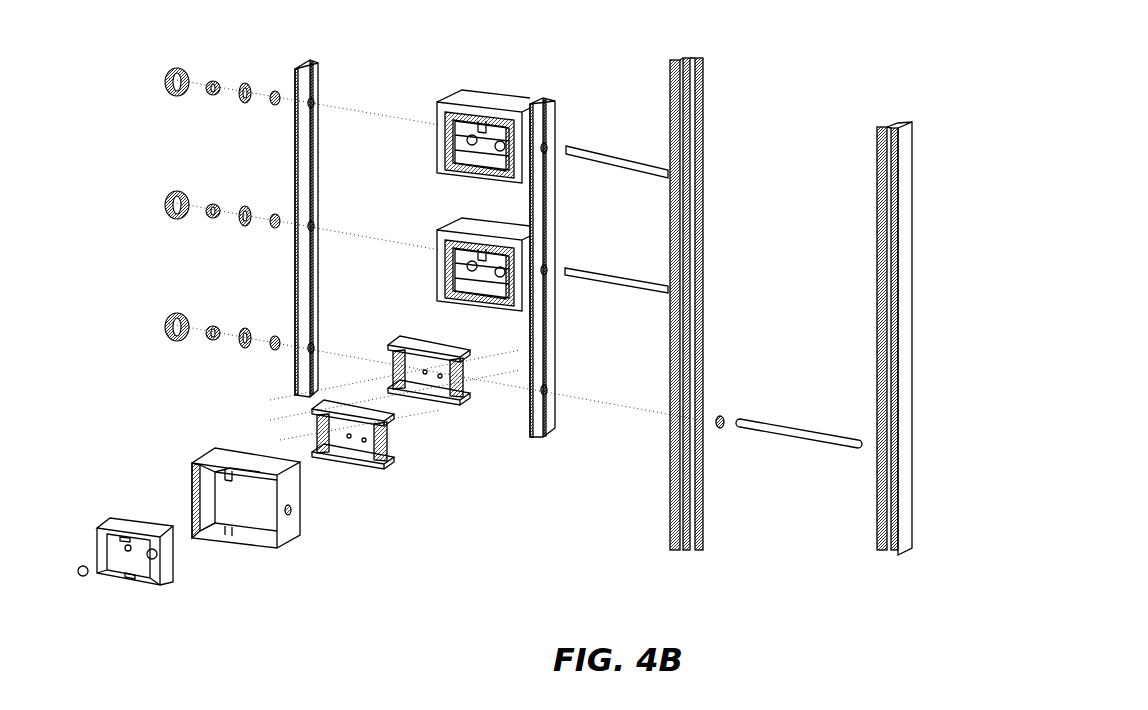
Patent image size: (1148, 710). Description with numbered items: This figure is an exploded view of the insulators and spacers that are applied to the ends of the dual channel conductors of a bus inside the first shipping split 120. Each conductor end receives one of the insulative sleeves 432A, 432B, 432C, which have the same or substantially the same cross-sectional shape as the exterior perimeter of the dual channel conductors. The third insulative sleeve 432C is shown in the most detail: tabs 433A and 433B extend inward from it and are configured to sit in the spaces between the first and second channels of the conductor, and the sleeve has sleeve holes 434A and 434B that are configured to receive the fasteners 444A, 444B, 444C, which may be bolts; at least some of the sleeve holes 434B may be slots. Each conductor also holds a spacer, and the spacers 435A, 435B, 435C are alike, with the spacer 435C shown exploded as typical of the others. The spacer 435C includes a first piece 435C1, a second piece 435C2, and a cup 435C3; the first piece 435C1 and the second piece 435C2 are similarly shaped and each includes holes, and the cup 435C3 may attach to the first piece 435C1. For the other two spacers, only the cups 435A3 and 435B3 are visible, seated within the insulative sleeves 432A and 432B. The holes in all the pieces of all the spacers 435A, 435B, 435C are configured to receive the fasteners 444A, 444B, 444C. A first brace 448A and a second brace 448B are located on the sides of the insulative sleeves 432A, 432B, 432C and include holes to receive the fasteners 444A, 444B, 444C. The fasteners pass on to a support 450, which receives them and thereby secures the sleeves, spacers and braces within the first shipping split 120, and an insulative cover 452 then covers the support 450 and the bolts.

The first shipping split 120 is at (733, 68).
The insulative sleeve 432A is at (427, 108).
The insulative sleeve 432B is at (427, 246).
The insulative sleeve 432C is at (232, 495).
The tab 433A is at (212, 472).
The tab 433B is at (247, 542).
The sleeve hole 434A is at (208, 492).
The sleeve hole 434B is at (302, 505).
The spacer 435A is at (419, 126).
The cup 435A3 is at (477, 92).
The spacer 435B is at (419, 277).
The cup 435B3 is at (443, 262).
The spacer 435C is at (442, 538).
The first piece 435C1 is at (387, 460).
The second piece 435C2 is at (460, 398).
The cup 435C3 is at (170, 585).
The fastener 444A is at (650, 160).
The fastener 444B is at (645, 280).
The fastener 444C is at (830, 437).
The first brace 448A is at (547, 100).
The second brace 448B is at (295, 138).
The support 450 is at (703, 105).
The insulative cover 452 is at (877, 200).